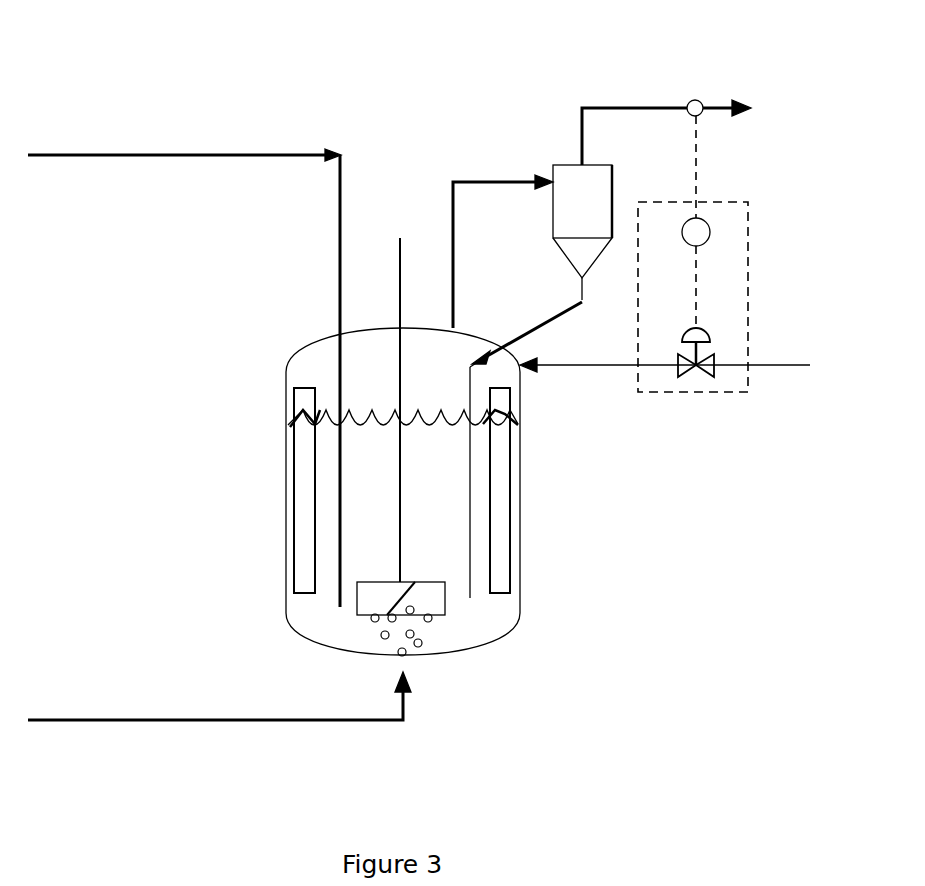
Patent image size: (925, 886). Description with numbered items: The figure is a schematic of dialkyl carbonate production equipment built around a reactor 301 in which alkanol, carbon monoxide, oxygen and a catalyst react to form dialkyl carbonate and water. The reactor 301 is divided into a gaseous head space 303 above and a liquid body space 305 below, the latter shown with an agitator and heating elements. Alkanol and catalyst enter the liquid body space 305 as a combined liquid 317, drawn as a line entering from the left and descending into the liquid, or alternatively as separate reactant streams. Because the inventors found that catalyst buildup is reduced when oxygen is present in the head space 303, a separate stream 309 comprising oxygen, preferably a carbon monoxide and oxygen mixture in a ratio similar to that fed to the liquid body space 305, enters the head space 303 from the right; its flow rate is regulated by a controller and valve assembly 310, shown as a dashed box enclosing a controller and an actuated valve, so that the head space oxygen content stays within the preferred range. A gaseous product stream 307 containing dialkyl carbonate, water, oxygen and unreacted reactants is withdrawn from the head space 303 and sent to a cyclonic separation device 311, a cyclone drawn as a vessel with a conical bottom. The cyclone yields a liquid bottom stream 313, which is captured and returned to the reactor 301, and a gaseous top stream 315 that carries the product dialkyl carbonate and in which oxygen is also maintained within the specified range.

The reactor 301 is at (508, 625).
The gaseous head space 303 is at (370, 381).
The liquid body space 305 is at (367, 519).
The gaseous product stream 307 is at (455, 175).
The oxygen-containing stream 309 is at (785, 368).
The controller and valve assembly 310 is at (748, 252).
The cyclonic separation device 311 is at (550, 163).
The liquid bottom stream 313 is at (540, 327).
The gaseous top stream 315 is at (667, 107).
The combined liquid 317 is at (114, 153).